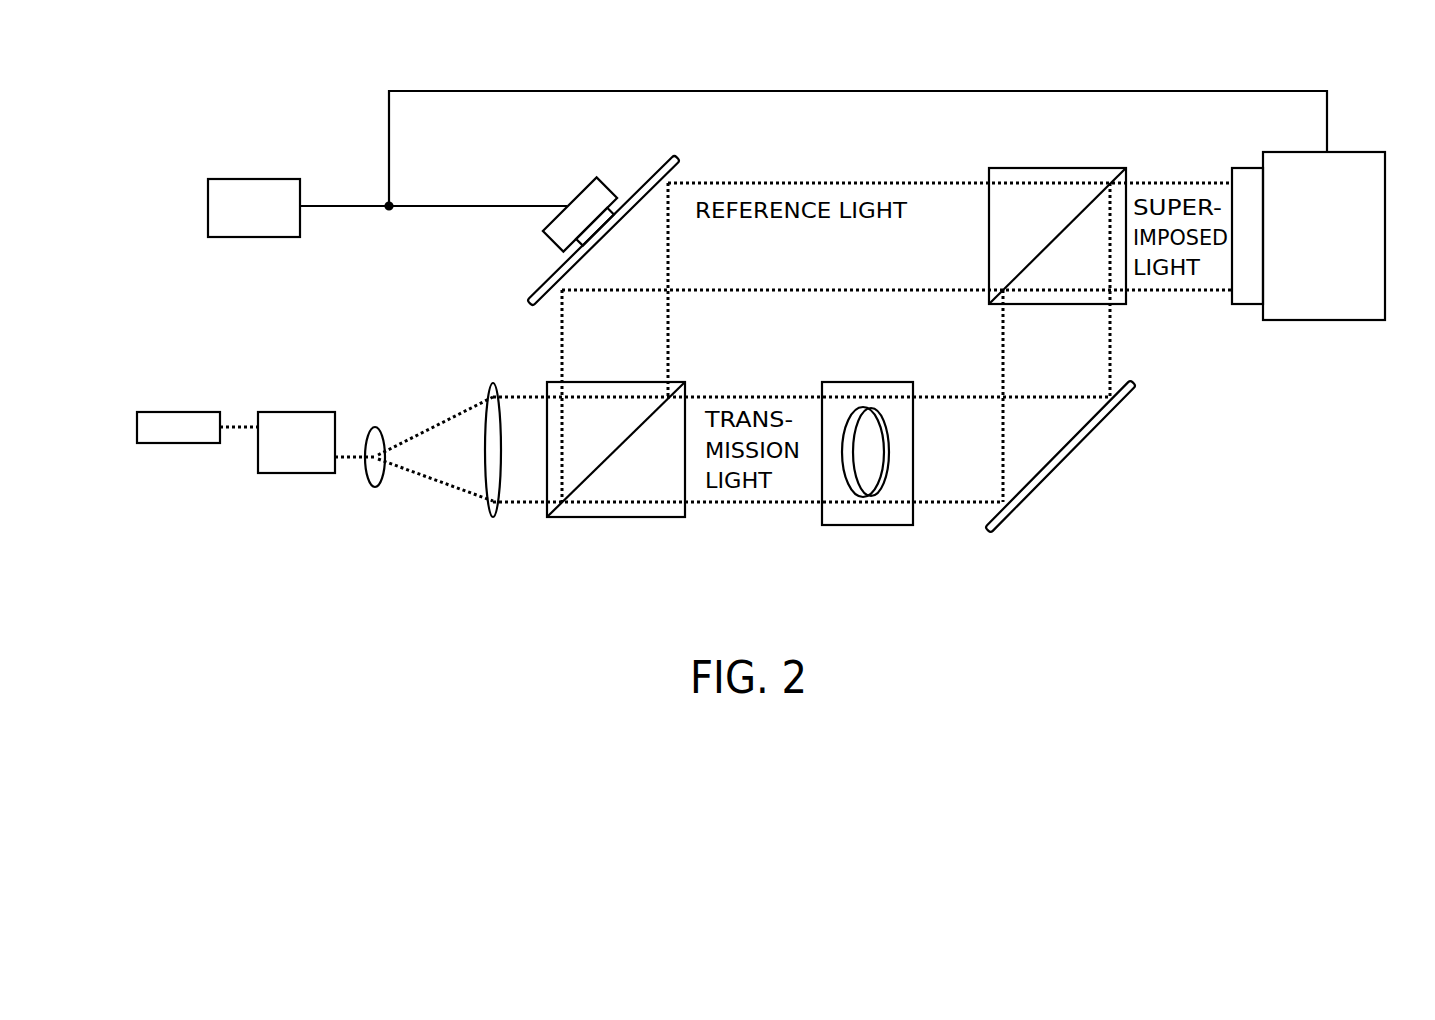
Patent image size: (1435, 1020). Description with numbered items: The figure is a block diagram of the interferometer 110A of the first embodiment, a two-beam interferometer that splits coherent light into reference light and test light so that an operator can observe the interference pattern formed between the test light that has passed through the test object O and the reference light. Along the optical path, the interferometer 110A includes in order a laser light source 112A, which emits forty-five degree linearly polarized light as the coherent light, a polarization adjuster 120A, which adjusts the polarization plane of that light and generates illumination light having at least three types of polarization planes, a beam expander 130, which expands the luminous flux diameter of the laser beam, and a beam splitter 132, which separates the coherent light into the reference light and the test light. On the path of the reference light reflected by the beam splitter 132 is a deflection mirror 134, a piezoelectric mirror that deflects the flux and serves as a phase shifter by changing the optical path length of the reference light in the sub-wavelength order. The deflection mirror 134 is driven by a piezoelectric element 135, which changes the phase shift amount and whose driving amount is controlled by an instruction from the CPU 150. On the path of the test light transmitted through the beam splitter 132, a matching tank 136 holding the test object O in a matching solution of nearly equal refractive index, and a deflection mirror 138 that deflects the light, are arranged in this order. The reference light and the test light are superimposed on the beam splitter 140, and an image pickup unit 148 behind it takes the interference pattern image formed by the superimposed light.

The interferometer 110A is at (736, 78).
The CPU 150 is at (207, 187).
The piezoelectric element 135 is at (580, 190).
The deflection mirror 134 is at (658, 172).
The beam splitter 140 is at (1067, 203).
The image pickup unit 148 is at (1316, 266).
The laser light source 112A is at (198, 395).
The polarization adjuster 120A is at (258, 476).
The beam expander 130 is at (433, 419).
The beam splitter 132 is at (621, 467).
The matching tank 136 is at (860, 436).
The test object O is at (883, 483).
The deflection mirror 138 is at (1088, 437).